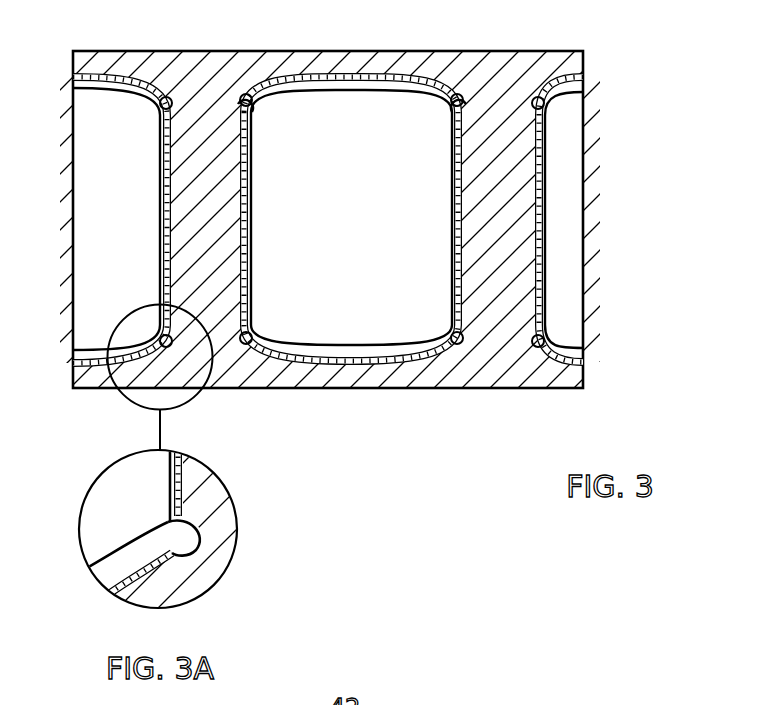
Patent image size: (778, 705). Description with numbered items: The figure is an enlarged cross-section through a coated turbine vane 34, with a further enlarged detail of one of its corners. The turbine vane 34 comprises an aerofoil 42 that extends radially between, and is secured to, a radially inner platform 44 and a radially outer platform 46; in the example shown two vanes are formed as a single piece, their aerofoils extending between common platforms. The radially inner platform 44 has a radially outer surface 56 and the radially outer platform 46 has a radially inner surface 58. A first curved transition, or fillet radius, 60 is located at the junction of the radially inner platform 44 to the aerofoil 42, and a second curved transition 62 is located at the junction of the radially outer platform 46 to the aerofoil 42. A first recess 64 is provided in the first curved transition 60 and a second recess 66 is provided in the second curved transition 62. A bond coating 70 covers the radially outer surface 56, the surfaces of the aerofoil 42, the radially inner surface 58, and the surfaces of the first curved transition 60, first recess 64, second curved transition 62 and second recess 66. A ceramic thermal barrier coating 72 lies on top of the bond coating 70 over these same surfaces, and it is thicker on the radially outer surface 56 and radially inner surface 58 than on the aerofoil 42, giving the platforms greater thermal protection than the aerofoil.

In FIG. 3, the turbine vane 34 is at (152, 213).
In FIG. 3, the aerofoil 42 is at (232, 240).
In FIG. 3A, the aerofoil 42 is at (167, 530).
In FIG. 3, the radially inner platform 44 is at (371, 372).
In FIG. 3, the radially outer platform 46 is at (336, 84).
In FIG. 3, the radially outer surface 56 is at (312, 360).
In FIG. 3, the radially inner surface 58 is at (384, 90).
In FIG. 3, the first curved transition 60 is at (257, 355).
In FIG. 3, the second curved transition 62 is at (250, 92).
In FIG. 3, the first recess 64 is at (247, 333).
In FIG. 3, the second recess 66 is at (238, 108).
In FIG. 3, the bond coating 70 is at (331, 77).
In FIG. 3A, the bond coating 70 is at (179, 487).
In FIG. 3, the ceramic thermal barrier coating 72 is at (404, 82).